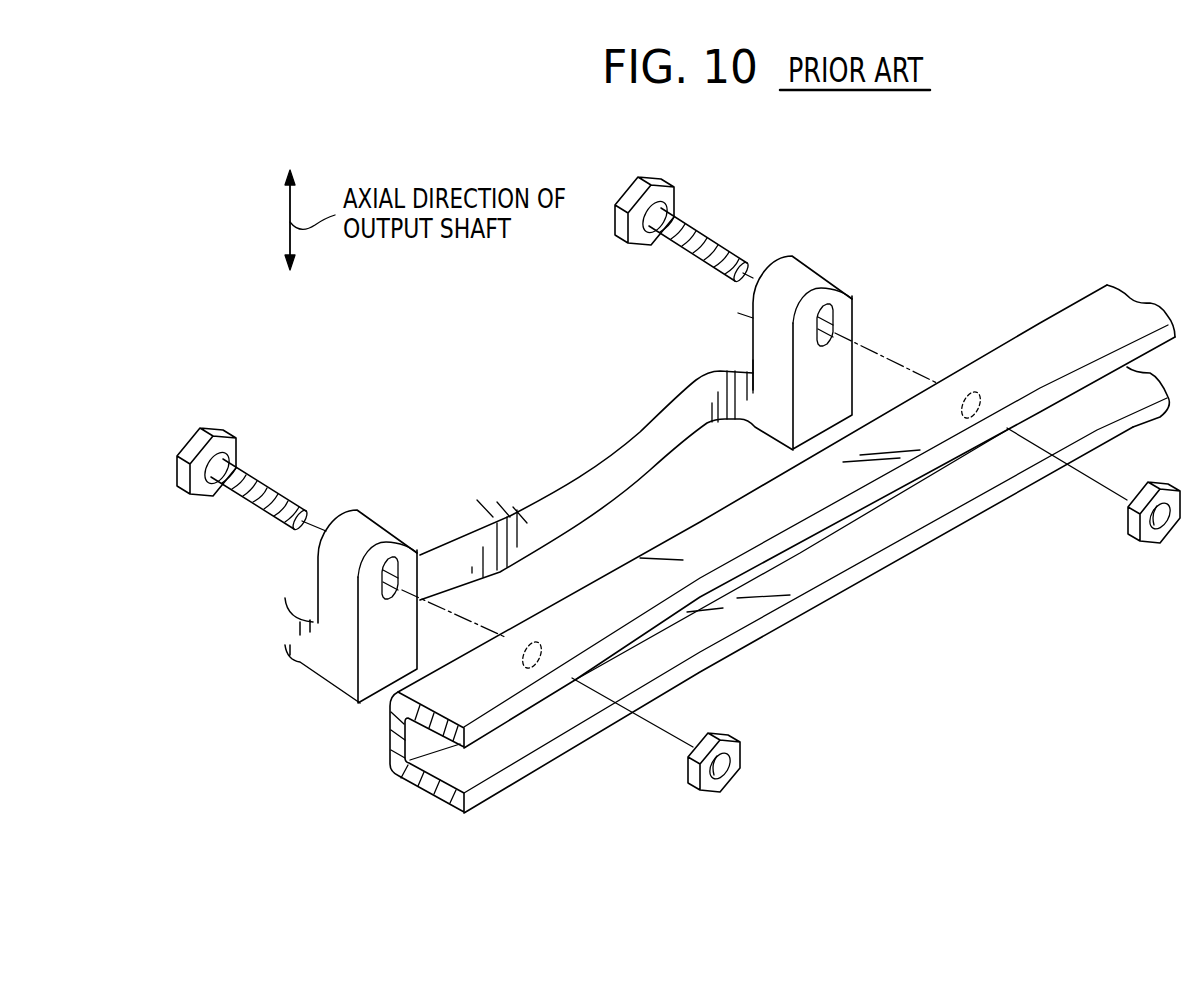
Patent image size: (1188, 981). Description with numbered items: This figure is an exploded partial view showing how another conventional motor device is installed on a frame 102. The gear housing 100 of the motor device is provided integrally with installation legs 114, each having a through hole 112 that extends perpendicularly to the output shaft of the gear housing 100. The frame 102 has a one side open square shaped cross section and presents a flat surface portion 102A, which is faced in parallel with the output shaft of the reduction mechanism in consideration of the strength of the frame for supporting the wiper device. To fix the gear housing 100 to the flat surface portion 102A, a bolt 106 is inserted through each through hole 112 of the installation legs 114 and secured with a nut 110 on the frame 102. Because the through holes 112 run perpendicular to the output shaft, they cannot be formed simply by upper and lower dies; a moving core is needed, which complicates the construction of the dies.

The gear housing 100 is at (597, 518).
The frame 102 is at (848, 590).
The flat surface portion 102A is at (391, 735).
The bolt 106 is at (188, 497).
The nut 110 is at (710, 790).
The through holes 112 is at (393, 600).
The installation legs 114 is at (377, 527).